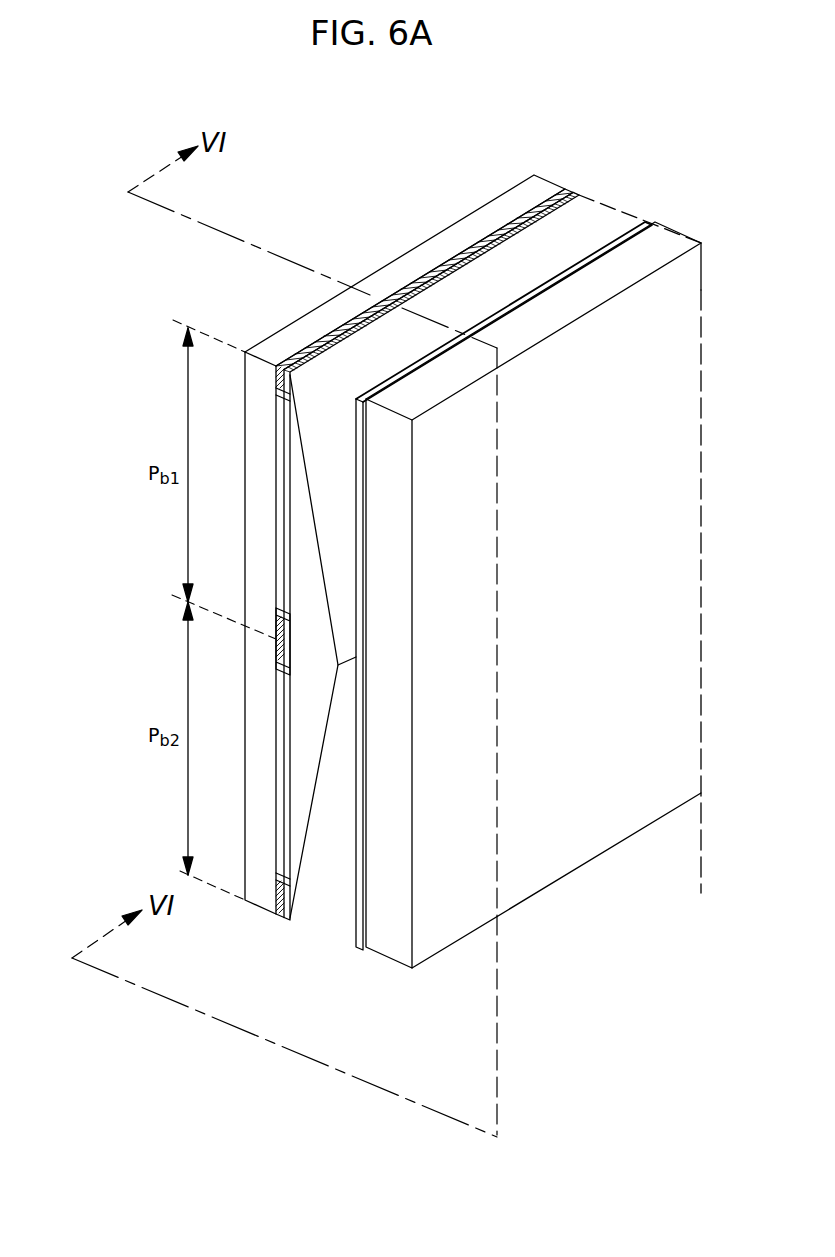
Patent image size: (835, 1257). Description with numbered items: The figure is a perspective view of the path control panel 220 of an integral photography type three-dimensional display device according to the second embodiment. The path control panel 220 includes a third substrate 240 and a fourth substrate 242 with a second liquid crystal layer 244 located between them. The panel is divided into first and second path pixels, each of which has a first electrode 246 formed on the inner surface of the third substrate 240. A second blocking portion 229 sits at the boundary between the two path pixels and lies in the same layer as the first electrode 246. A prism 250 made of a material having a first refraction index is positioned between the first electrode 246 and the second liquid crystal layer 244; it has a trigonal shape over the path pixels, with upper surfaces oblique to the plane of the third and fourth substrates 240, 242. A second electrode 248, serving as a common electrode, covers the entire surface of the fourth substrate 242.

The path control panel 220 is at (347, 173).
The third substrate 240 is at (257, 892).
The first electrode 246 is at (278, 441).
The prism 250 is at (305, 542).
The second blocking portion 229 is at (275, 650).
The second liquid crystal layer 244 is at (356, 940).
The second electrode 248 is at (358, 472).
The fourth substrate 242 is at (392, 942).